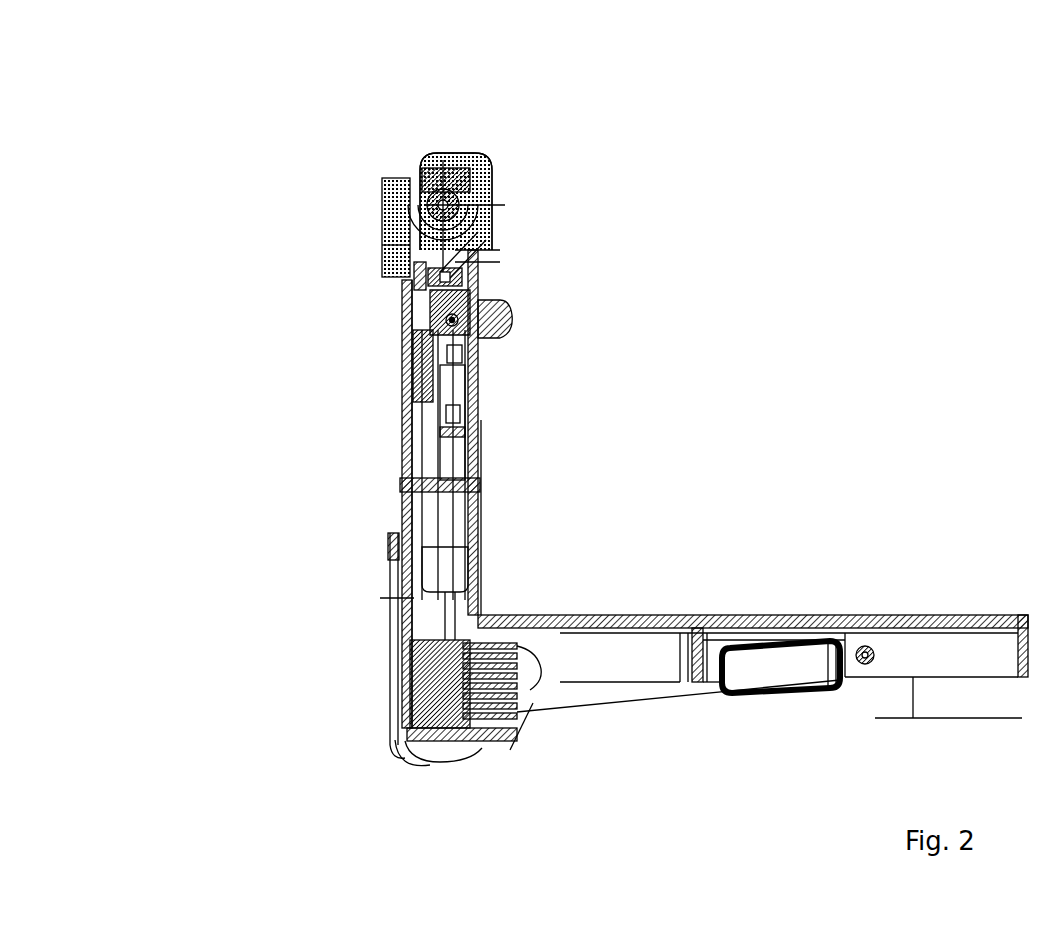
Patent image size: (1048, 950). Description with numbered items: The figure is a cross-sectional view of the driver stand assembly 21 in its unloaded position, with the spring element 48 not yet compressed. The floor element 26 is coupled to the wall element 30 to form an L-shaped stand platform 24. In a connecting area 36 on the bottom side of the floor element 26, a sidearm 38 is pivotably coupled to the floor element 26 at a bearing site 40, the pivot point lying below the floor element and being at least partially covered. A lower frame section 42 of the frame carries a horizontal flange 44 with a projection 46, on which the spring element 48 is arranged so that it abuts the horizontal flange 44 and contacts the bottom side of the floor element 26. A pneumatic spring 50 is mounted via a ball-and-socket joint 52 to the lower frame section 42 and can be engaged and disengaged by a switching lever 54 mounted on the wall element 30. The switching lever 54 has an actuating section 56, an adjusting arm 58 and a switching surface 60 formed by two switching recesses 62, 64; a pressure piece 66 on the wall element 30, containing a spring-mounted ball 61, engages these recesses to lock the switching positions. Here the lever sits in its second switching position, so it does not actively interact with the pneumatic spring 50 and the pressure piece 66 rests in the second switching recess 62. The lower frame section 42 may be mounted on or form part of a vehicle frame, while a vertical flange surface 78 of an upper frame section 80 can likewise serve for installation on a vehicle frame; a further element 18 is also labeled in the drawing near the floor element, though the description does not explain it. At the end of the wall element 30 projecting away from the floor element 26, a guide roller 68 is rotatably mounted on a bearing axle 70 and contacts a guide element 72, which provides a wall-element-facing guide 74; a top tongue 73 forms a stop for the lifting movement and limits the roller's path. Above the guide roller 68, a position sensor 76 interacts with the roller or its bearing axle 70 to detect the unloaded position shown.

The driver stand assembly 21 is at (222, 196).
The upper frame section 80 is at (386, 180).
The vertical flange surface 78 is at (382, 240).
The position sensor 76 is at (432, 155).
The bearing axle 70 is at (455, 152).
The top tongue 73 is at (458, 152).
The guide roller 68 is at (488, 167).
The wall-element-facing guide 74 is at (488, 238).
The guide element 72 is at (500, 232).
The pressure piece 66 is at (480, 272).
The spring-mounted ball 61 is at (480, 290).
The switching surface 60 is at (465, 298).
The switching lever 54 is at (505, 330).
The actuating section 56 is at (500, 305).
The switching recess 64 is at (420, 285).
The adjusting arm 58 is at (425, 382).
The pneumatic spring 50 is at (481, 418).
The wall element 30 is at (480, 488).
The stand platform 24 is at (620, 615).
The floor element 26 is at (748, 615).
The connecting area 36 is at (910, 617).
The bearing site 40 is at (866, 645).
The base 18 is at (948, 697).
The switching recess 62 is at (770, 695).
The sidearm 38 is at (612, 698).
The projection 46 is at (537, 703).
The horizontal flange 44 is at (455, 745).
The spring element 48 is at (530, 720).
The ball-and-socket joint 52 is at (450, 767).
The lower frame section 42 is at (395, 745).